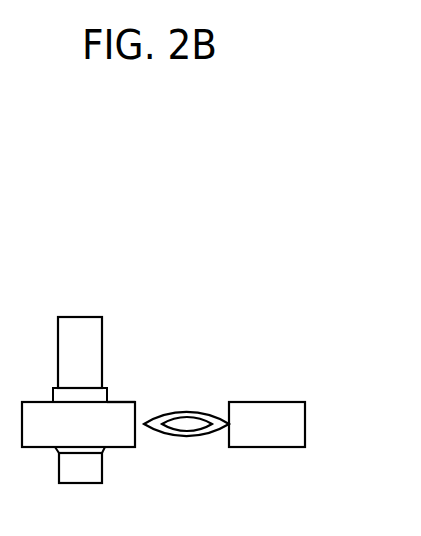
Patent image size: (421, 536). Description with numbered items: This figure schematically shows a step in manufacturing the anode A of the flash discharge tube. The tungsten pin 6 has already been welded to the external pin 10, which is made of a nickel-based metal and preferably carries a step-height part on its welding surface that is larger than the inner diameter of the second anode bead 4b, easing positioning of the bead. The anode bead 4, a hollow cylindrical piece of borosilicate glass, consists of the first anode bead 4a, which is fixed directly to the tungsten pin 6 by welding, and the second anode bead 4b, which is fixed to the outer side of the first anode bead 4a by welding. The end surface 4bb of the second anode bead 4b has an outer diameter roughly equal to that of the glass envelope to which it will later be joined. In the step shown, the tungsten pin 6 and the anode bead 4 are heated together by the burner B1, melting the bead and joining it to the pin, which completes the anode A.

The anode A is at (230, 250).
The anode bead 4 is at (127, 354).
The first anode bead 4a is at (77, 398).
The second anode bead 4b is at (85, 415).
The end surface 4bb is at (212, 372).
The tungsten pin 6 is at (74, 317).
The external pin 10 is at (90, 472).
The burner B1 is at (265, 402).